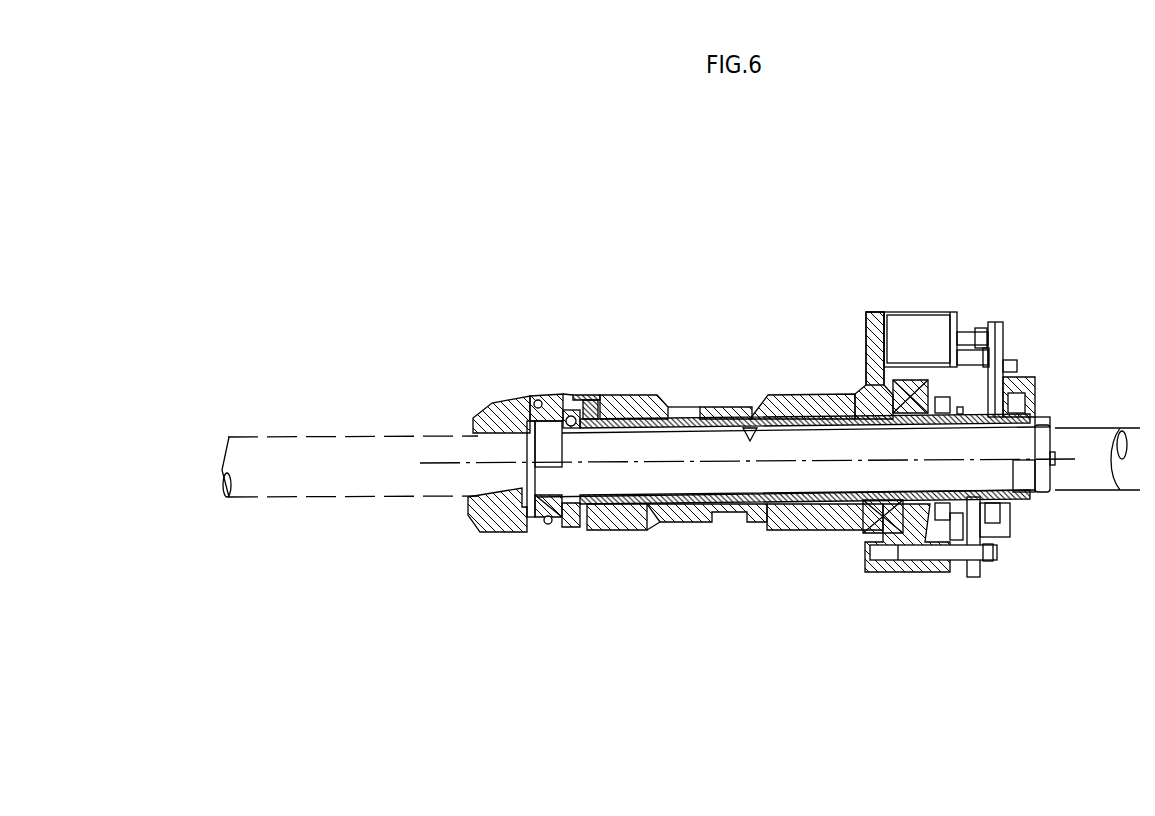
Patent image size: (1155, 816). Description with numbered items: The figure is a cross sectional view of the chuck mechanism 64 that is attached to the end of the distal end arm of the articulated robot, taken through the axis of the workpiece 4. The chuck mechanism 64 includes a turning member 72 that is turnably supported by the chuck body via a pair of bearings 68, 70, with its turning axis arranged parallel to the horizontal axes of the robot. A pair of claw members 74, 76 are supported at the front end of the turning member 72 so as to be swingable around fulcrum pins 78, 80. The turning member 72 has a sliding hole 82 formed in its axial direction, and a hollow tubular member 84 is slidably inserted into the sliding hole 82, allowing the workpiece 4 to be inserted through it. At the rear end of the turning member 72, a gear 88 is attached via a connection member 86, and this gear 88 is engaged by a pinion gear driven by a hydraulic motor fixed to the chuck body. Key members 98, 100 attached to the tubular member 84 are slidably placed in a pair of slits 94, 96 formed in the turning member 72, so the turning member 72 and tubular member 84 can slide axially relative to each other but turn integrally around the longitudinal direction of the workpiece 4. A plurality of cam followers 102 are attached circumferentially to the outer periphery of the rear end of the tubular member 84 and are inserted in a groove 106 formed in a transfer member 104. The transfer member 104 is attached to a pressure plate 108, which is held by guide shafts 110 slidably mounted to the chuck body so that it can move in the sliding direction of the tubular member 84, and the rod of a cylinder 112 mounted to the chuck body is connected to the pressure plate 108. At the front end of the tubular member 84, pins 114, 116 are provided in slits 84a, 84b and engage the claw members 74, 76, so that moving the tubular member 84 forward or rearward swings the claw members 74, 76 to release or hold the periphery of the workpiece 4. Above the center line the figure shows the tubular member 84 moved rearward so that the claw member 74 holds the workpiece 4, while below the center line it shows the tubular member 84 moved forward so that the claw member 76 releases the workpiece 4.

The workpiece 4 is at (360, 457).
The chuck mechanism 64 is at (835, 553).
The bearing 68 is at (778, 393).
The bearing 70 is at (852, 385).
The turning member 72 is at (640, 395).
The claw member 74 is at (483, 398).
The claw member 76 is at (493, 537).
The fulcrum pin 78 is at (533, 395).
The fulcrum pin 80 is at (537, 533).
The sliding hole 82 is at (740, 405).
The tubular member 84 is at (768, 530).
The slit 84a is at (597, 395).
The slit 84b is at (587, 533).
The connection member 86 is at (890, 393).
The gear 88 is at (910, 377).
The slit 94 is at (686, 407).
The slit 96 is at (672, 530).
The key member 98 is at (714, 407).
The key member 100 is at (707, 530).
The cam follower 102 is at (1040, 417).
The transfer member 104 is at (1040, 377).
The groove 106 is at (1022, 345).
The pressure plate 108 is at (998, 325).
The guide shaft 110 is at (940, 563).
The cylinder 112 is at (933, 333).
The pin 114 is at (563, 395).
The pin 116 is at (555, 533).